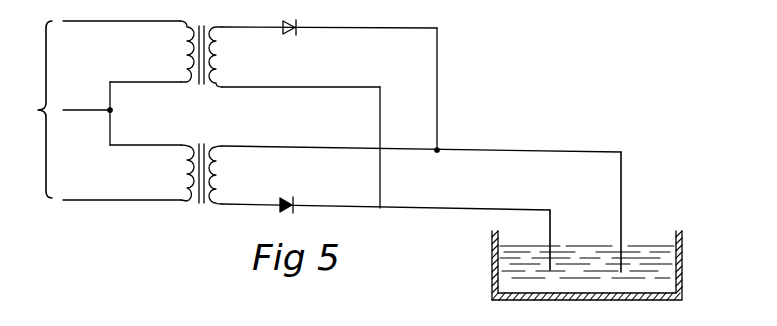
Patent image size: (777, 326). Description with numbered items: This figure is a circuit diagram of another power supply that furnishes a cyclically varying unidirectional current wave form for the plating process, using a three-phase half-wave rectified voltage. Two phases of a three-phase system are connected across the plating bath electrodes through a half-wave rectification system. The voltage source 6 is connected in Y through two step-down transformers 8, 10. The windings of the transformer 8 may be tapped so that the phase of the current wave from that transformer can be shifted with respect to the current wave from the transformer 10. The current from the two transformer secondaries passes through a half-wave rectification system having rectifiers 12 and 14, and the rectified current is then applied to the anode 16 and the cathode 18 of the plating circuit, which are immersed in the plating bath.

The voltage source 6 is at (101, 110).
The step-down transformer 8 is at (213, 22).
The step-down transformer 10 is at (199, 205).
The rectifier 12 is at (289, 22).
The rectifier 14 is at (285, 196).
The anode 16 is at (552, 223).
The cathode 18 is at (623, 223).